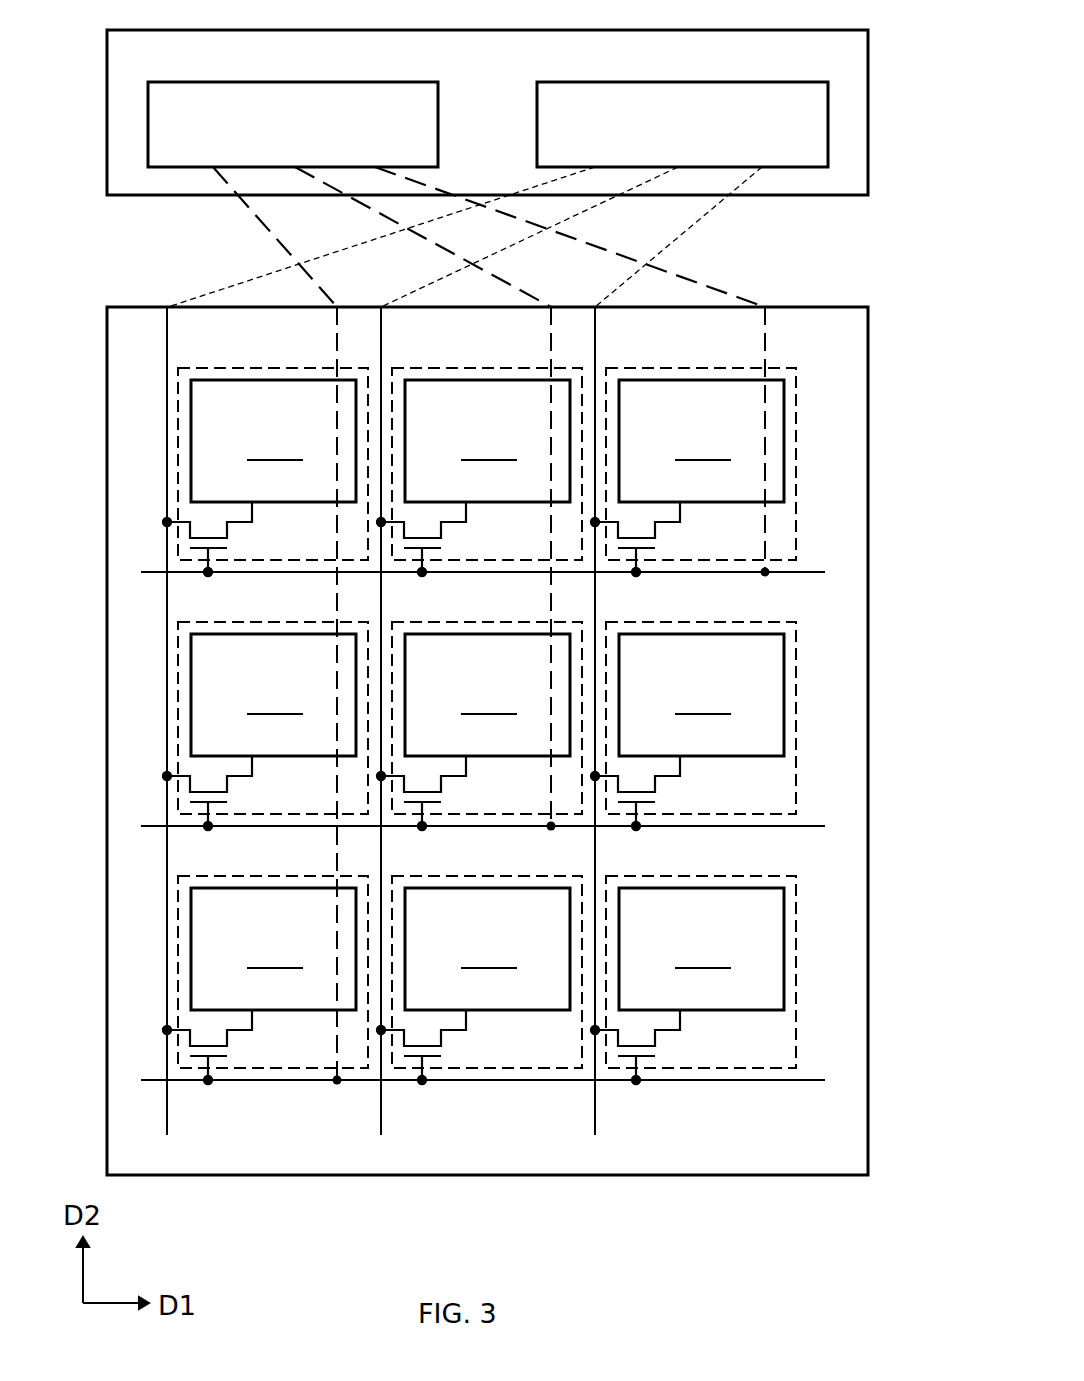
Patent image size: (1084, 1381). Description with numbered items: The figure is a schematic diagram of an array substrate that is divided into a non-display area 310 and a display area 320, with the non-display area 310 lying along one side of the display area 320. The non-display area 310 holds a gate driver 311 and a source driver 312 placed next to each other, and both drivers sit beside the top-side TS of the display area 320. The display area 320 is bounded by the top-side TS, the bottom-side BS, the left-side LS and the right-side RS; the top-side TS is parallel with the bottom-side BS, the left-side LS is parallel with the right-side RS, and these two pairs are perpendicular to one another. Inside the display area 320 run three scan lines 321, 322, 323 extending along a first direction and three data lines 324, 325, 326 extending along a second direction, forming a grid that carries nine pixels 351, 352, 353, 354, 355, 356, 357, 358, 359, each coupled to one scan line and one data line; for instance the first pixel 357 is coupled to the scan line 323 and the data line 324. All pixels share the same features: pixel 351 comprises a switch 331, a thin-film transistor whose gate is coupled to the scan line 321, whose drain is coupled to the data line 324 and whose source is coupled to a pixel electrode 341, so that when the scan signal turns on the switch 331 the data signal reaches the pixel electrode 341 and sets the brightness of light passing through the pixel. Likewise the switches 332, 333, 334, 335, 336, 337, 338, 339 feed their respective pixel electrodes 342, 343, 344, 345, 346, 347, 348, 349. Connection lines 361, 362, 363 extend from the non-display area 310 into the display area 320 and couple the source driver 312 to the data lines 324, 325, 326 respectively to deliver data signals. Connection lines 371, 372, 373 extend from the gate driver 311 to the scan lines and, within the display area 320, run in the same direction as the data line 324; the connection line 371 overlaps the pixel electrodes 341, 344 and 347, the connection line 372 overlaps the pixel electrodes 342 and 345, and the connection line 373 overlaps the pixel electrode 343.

The non-display area 310 is at (868, 118).
The gate driver 311 is at (148, 82).
The source driver 312 is at (537, 82).
The display area 320 is at (868, 343).
The scan line 321 is at (812, 572).
The scan line 322 is at (812, 826).
The scan line 323 is at (812, 1080).
The data line 324 is at (167, 1118).
The data line 325 is at (381, 1118).
The data line 326 is at (595, 1118).
The switch 331 is at (227, 536).
The switch 332 is at (441, 536).
The switch 333 is at (655, 536).
The switch 334 is at (227, 790).
The switch 335 is at (441, 790).
The switch 336 is at (655, 790).
The switch 337 is at (227, 1044).
The switch 338 is at (441, 1044).
The switch 339 is at (655, 1044).
The pixel electrode 341 is at (273, 441).
The pixel electrode 342 is at (487, 441).
The pixel electrode 343 is at (701, 441).
The pixel electrode 344 is at (273, 695).
The pixel electrode 345 is at (487, 695).
The pixel electrode 346 is at (701, 695).
The pixel electrode 347 is at (273, 949).
The pixel electrode 348 is at (487, 949).
The pixel electrode 349 is at (701, 949).
The pixel 351 is at (178, 368).
The pixel 352 is at (392, 368).
The pixel 353 is at (606, 368).
The pixel 354 is at (178, 622).
The pixel 355 is at (392, 622).
The pixel 356 is at (606, 622).
The pixel 357 is at (178, 876).
The pixel 358 is at (392, 876).
The pixel 359 is at (606, 876).
The connection line 361 is at (345, 254).
The connection line 362 is at (585, 214).
The connection line 363 is at (698, 223).
The connection line 371 is at (267, 229).
The connection line 372 is at (367, 214).
The connection line 373 is at (599, 250).
The top-side TS is at (826, 307).
The left-side LS is at (107, 1126).
The right-side RS is at (869, 1126).
The bottom-side BS is at (785, 1175).